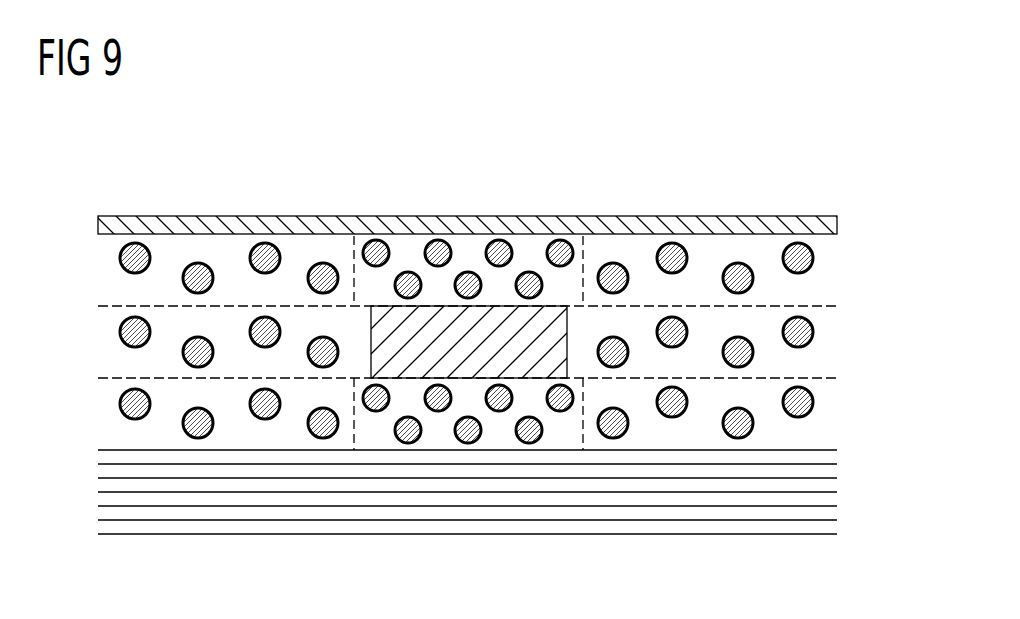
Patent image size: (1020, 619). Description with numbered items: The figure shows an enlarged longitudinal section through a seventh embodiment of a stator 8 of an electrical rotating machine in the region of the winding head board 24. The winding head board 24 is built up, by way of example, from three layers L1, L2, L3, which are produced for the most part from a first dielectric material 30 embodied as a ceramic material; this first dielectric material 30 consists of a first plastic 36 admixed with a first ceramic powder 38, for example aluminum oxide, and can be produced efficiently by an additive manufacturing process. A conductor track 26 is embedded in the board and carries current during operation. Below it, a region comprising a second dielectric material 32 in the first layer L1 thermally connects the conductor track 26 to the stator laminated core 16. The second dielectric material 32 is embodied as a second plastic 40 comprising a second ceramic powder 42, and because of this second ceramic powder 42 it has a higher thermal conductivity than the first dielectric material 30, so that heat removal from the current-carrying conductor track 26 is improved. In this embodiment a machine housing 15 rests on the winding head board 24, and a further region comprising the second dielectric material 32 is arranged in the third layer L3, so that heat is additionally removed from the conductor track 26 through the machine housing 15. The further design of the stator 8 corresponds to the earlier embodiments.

The stator 8 is at (828, 132).
The machine housing 15 is at (260, 217).
The stator laminated core 16 is at (796, 525).
The winding head board 24 is at (717, 262).
The conductor track 26 is at (371, 347).
The first dielectric material 30 is at (113, 292).
The second dielectric material 32 is at (528, 262).
The first plastic 36 is at (168, 243).
The first ceramic powder 38 is at (673, 243).
The second plastic 40 is at (403, 248).
The second ceramic powder 42 is at (463, 272).
The first layer L1 is at (820, 413).
The second layer L2 is at (820, 343).
The third layer L3 is at (820, 268).